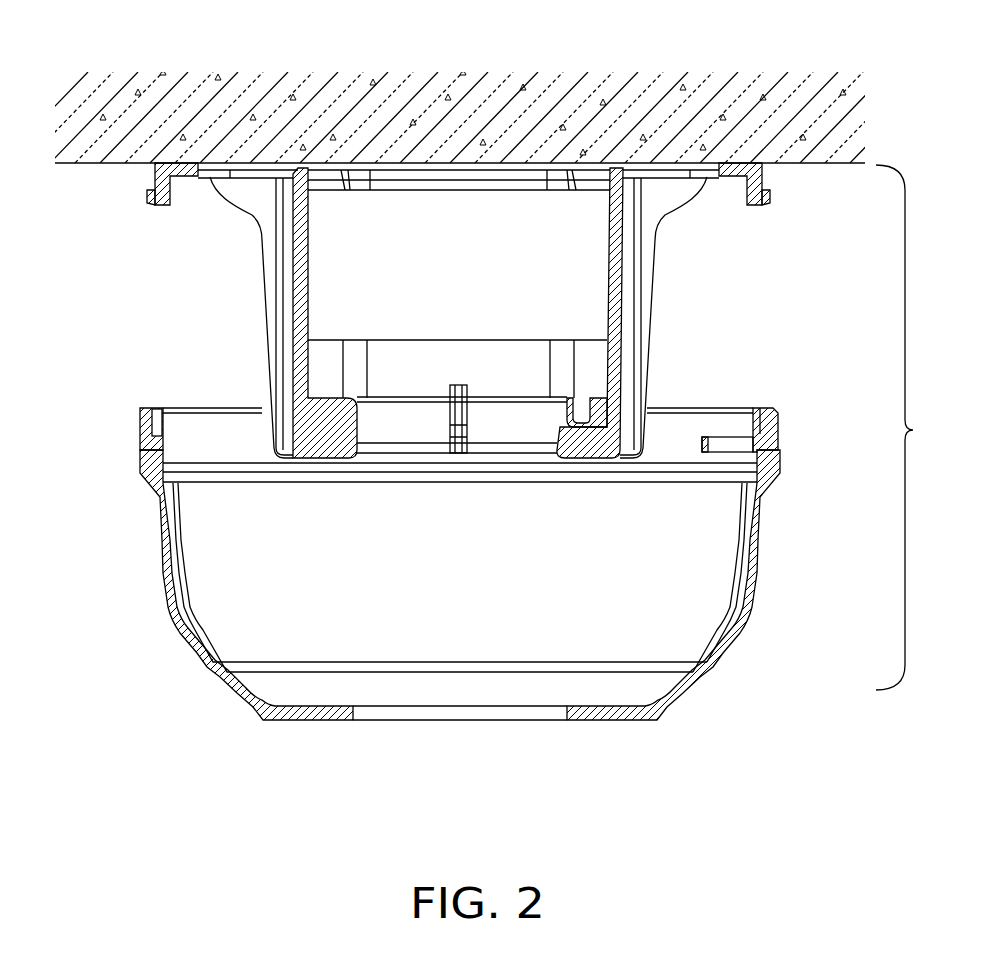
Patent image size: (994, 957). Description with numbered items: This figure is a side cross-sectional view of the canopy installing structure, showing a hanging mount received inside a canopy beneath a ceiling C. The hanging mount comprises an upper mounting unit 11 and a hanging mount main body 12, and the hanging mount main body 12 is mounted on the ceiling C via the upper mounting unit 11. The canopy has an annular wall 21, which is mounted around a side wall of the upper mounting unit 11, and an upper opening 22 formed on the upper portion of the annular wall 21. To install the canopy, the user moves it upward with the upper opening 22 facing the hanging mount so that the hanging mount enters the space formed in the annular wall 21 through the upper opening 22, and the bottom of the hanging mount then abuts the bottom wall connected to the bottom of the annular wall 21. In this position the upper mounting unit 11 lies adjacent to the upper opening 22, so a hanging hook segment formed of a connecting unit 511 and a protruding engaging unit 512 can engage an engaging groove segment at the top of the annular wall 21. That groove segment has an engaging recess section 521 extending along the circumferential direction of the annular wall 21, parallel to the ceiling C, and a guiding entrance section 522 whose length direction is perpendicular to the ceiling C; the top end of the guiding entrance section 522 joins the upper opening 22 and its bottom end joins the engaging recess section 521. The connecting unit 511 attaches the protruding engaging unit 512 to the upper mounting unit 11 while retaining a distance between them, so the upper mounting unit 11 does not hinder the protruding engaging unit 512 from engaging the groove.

The ceiling C is at (538, 95).
The upper mounting unit 11 is at (470, 182).
The hanging mount main body 12 is at (286, 311).
The annular wall 21 is at (746, 612).
The upper opening 22 is at (240, 402).
The connecting unit 511 is at (152, 185).
The protruding engaging unit 512 is at (150, 200).
The engaging recess section 521 is at (735, 441).
The guiding entrance section 522 is at (778, 420).